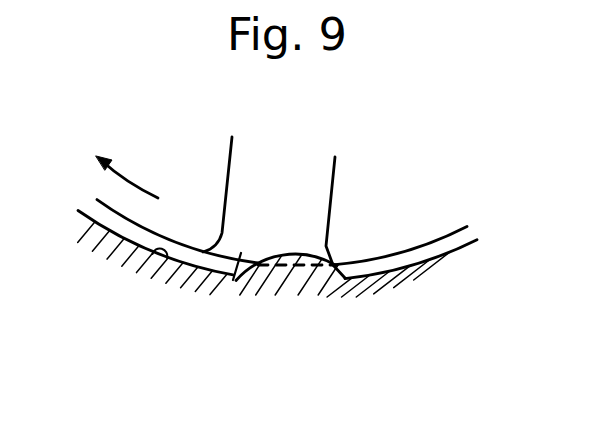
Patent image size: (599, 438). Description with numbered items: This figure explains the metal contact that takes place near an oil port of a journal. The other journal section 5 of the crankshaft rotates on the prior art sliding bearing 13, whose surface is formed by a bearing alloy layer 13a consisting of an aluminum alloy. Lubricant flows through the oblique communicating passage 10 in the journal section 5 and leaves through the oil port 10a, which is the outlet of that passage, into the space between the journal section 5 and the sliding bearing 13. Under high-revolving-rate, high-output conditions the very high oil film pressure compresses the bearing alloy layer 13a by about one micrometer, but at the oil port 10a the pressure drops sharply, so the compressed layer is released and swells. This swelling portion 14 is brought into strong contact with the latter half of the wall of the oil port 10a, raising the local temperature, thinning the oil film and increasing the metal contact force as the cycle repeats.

The journal section 5 is at (362, 240).
The communicating passage 10 is at (315, 197).
The oil port 10a is at (228, 275).
The sliding bearing 13 is at (178, 272).
The bearing alloy layer 13a is at (160, 255).
The swelling portion 14 is at (297, 268).